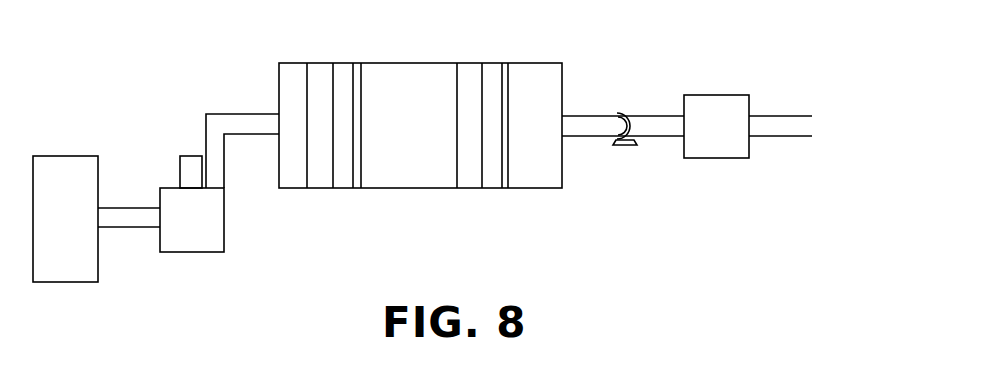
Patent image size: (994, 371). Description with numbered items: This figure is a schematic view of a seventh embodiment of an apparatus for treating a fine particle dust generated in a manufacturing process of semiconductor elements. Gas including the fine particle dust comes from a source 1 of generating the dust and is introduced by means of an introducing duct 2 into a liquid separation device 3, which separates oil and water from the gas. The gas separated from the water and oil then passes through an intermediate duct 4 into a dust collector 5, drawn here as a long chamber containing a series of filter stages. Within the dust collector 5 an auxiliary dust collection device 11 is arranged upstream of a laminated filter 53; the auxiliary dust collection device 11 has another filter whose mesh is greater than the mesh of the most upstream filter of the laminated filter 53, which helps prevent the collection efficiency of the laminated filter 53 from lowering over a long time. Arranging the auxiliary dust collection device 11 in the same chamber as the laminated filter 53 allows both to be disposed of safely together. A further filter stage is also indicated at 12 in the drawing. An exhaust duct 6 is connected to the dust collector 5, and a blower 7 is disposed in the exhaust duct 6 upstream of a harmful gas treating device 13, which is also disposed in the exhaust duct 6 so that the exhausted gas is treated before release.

The source 1 is at (63, 156).
The introducing duct 2 is at (130, 228).
The liquid separation device 3 is at (198, 252).
The intermediate duct 4 is at (248, 114).
The dust collector 5 is at (478, 63).
The exhaust duct 6 is at (798, 116).
The blower 7 is at (621, 113).
The auxiliary dust collection device 11 is at (307, 165).
The piston 12 is at (337, 63).
The harmful gas treating device 13 is at (718, 95).
The laminated filter 53 is at (510, 165).